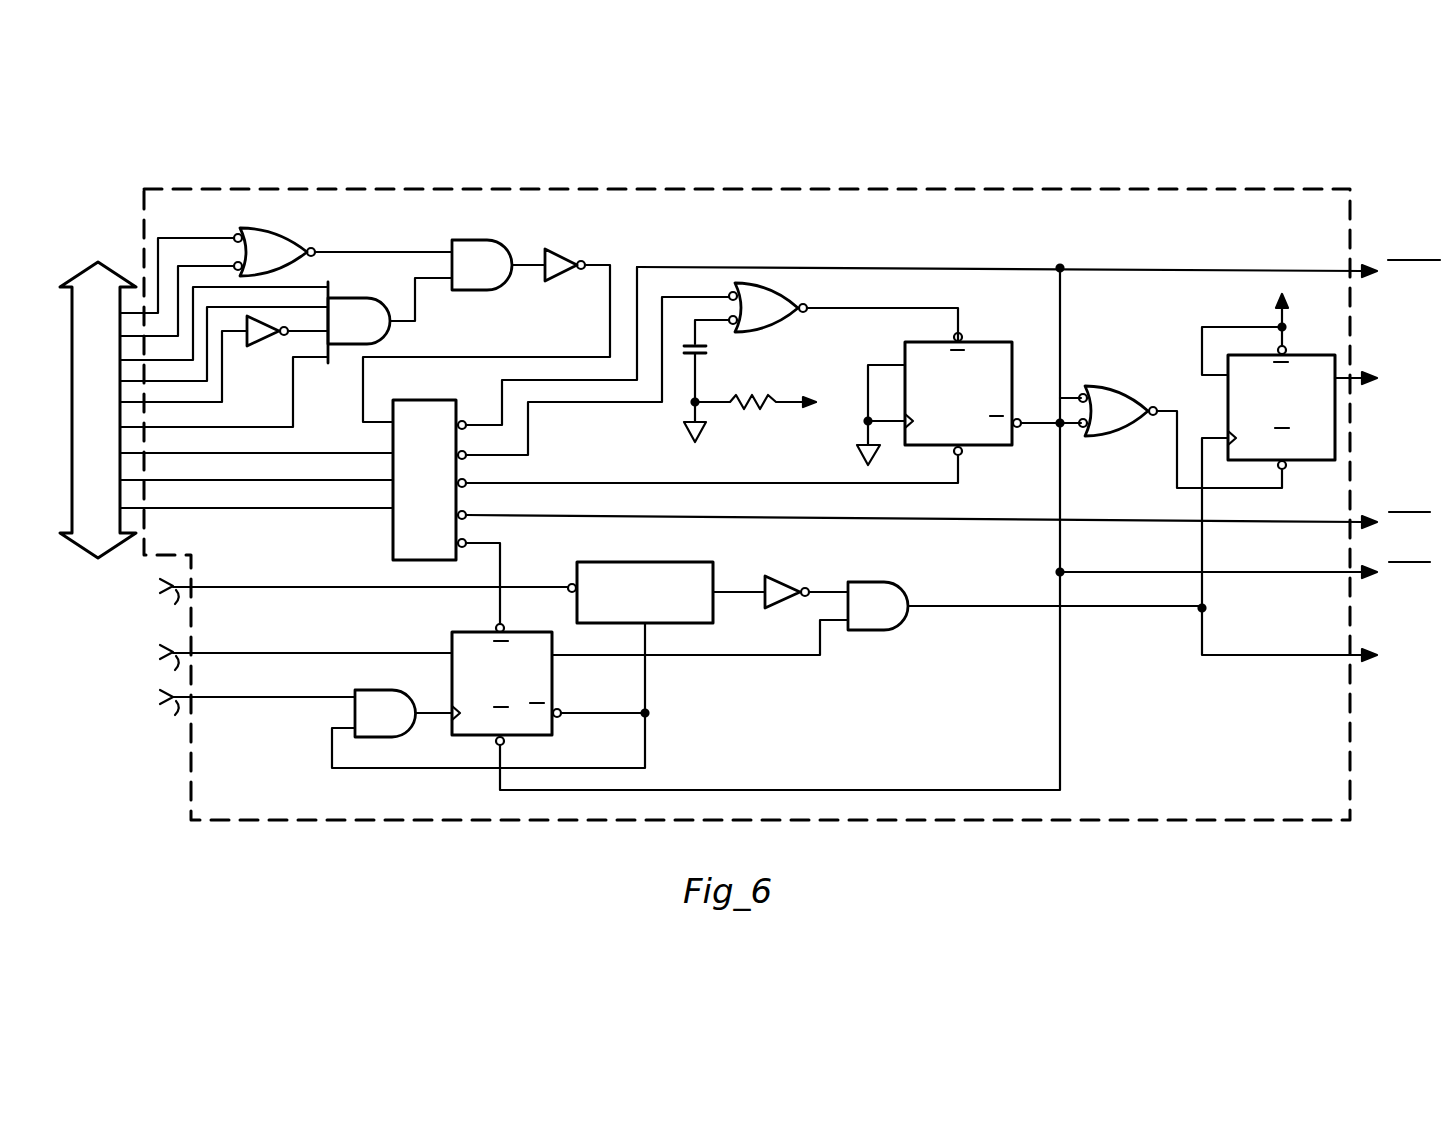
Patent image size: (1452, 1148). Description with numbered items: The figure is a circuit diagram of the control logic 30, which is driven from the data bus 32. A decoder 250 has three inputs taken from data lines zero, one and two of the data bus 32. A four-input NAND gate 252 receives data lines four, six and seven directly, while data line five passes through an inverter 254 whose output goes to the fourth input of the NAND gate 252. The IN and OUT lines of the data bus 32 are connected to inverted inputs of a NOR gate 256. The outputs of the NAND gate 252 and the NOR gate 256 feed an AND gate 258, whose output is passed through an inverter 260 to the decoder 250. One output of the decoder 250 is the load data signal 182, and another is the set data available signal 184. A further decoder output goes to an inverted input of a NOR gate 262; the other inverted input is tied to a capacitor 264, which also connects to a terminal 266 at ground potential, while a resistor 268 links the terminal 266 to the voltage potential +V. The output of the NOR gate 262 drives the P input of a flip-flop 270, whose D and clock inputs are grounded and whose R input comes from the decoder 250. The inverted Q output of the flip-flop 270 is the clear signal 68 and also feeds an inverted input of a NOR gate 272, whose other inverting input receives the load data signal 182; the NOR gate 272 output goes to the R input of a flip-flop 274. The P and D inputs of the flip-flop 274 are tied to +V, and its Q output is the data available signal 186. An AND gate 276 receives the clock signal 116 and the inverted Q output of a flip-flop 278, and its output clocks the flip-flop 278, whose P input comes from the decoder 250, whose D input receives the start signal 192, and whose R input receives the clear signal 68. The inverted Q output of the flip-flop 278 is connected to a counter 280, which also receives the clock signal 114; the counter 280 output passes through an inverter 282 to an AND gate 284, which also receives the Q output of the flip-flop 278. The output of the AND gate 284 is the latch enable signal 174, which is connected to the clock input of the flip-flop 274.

The control logic 30 is at (340, 189).
The data bus 32 is at (92, 262).
The clock signal 114 is at (323, 600).
The clock signal 116 is at (218, 710).
The start signal 192 is at (262, 665).
The load data signal 182 is at (1360, 268).
The data available signal 186 is at (1350, 375).
The set data available signal 184 is at (1352, 520).
The clear signal 68 is at (1352, 570).
The latch enable signal 174 is at (1352, 655).
The decoder 250 is at (413, 400).
The NAND gate 252 is at (359, 322).
The inverter 254 is at (266, 344).
The NOR gate 256 is at (274, 252).
The AND gate 258 is at (482, 265).
The inverter 260 is at (567, 259).
The NOR gate 262 is at (768, 307).
The capacitor 264 is at (704, 350).
The terminal 266 is at (698, 398).
The resistor 268 is at (750, 410).
The flip-flop 270 is at (974, 408).
The NOR gate 272 is at (1118, 411).
The flip-flop 274 is at (1300, 423).
The AND gate 276 is at (385, 713).
The flip-flop 278 is at (518, 698).
The counter 280 is at (650, 562).
The inverter 282 is at (780, 580).
The AND gate 284 is at (878, 606).